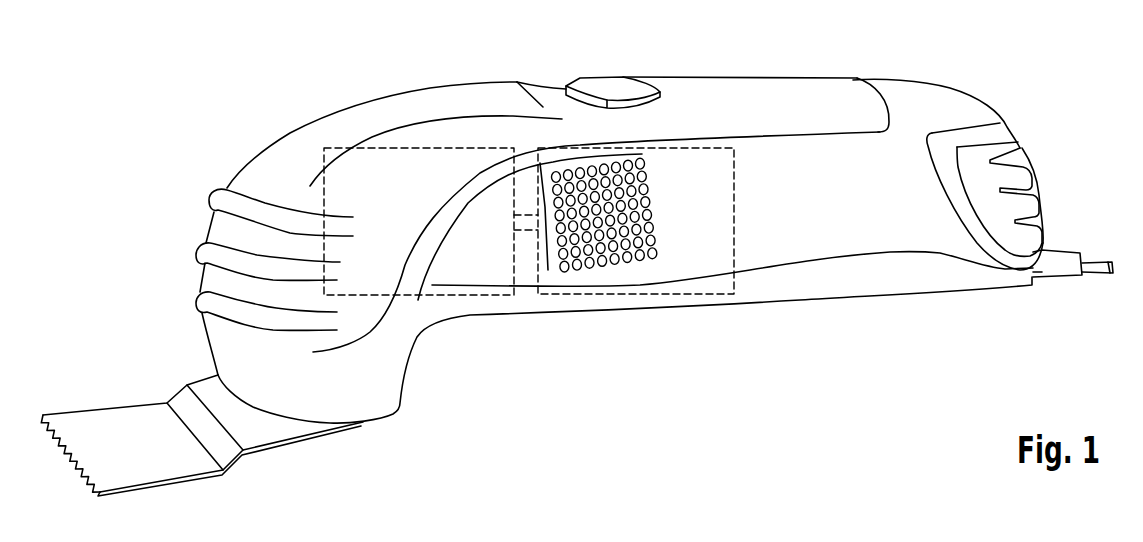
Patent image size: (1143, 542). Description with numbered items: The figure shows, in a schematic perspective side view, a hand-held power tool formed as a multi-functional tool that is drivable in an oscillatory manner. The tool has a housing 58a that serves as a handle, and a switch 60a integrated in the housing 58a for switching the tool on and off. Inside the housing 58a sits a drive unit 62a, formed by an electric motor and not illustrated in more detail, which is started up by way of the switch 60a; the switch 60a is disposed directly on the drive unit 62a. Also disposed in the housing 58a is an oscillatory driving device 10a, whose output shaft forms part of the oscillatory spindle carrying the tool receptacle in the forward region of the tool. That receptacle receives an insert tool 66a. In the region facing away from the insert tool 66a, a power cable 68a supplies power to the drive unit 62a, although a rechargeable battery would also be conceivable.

The oscillatory driving device 10a is at (466, 148).
The housing 58a is at (910, 93).
The switch 60a is at (605, 80).
The drive unit 62a is at (707, 148).
The insert tool 66a is at (150, 462).
The power cable 68a is at (1070, 257).